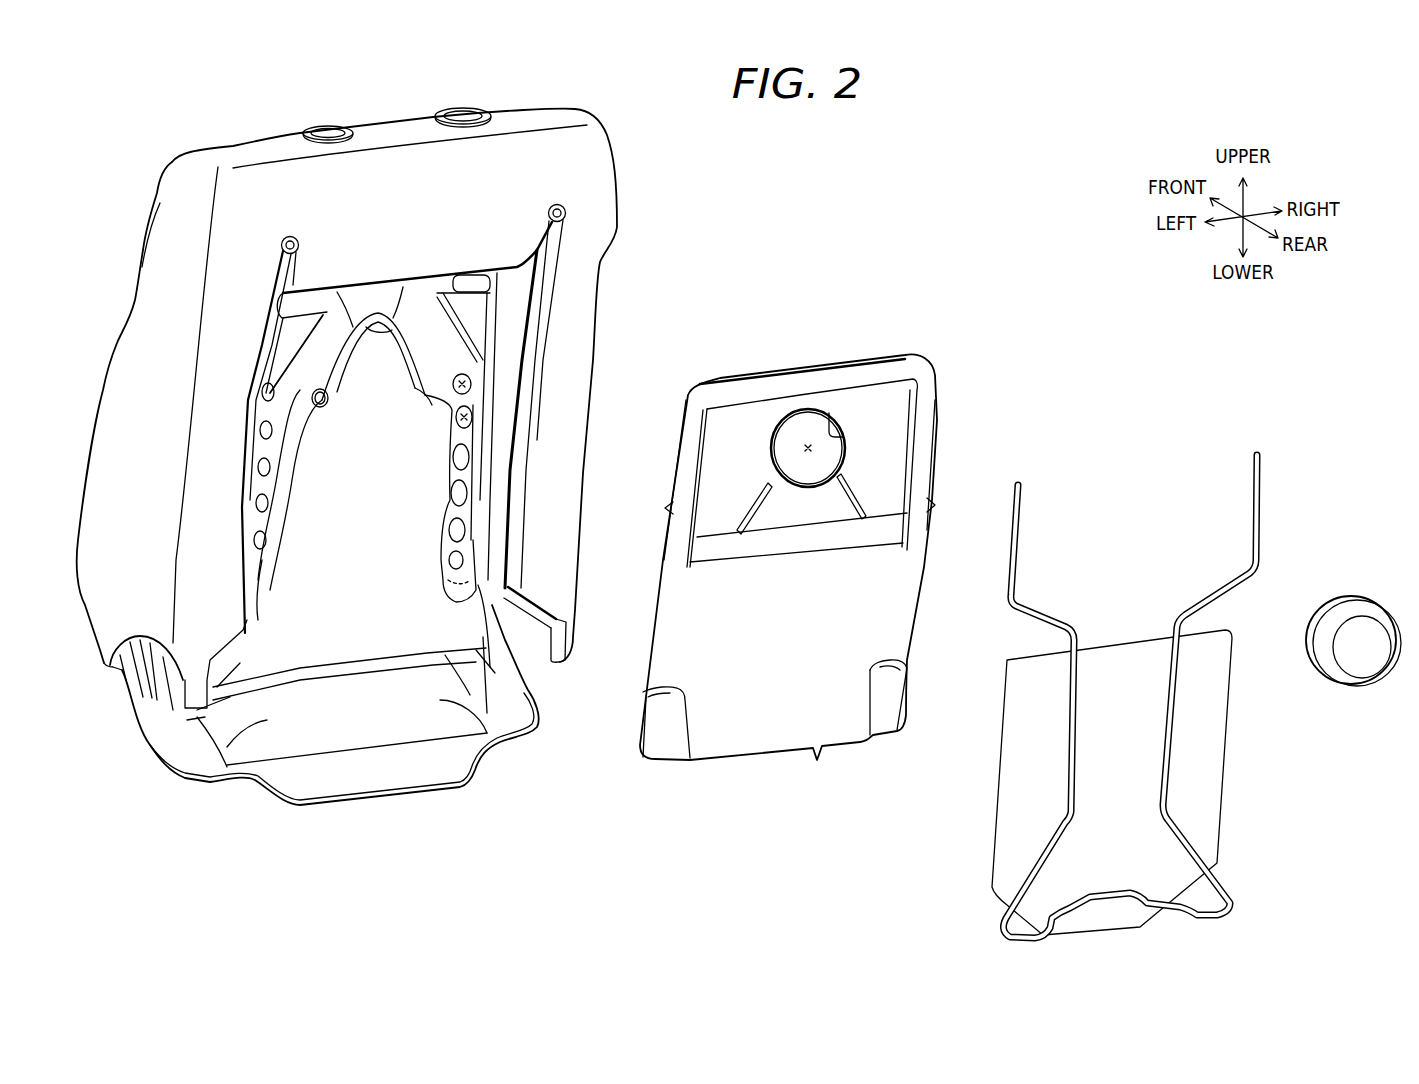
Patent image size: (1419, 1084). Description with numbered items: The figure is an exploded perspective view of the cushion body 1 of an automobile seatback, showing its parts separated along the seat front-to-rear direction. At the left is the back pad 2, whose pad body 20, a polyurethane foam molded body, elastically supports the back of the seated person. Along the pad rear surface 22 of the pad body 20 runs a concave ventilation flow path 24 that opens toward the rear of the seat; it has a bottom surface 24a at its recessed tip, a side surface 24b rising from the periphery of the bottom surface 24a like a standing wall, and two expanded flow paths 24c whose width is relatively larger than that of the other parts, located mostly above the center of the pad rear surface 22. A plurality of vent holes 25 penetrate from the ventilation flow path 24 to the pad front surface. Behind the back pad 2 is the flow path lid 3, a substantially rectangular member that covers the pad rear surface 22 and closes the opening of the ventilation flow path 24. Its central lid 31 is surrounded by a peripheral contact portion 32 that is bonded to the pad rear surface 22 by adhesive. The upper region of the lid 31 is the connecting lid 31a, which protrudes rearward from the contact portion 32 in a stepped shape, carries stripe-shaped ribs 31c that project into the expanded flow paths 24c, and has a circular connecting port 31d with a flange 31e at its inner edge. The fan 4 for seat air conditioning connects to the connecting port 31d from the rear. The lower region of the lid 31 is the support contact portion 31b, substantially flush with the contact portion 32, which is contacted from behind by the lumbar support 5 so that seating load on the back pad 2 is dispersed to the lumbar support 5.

The cushion body 1 is at (913, 181).
The back pad 2 is at (244, 142).
The flow path lid 3 is at (896, 350).
The fan 4 is at (1345, 597).
The lumbar support 5 is at (1120, 640).
The pad body 20 is at (399, 133).
The pad rear surface 22 is at (360, 605).
The ventilation flow path 24 is at (433, 348).
The bottom surface 24a is at (368, 300).
The side surface 24b is at (350, 372).
The expanded flow path 24c is at (300, 388).
The vent hole 25 is at (455, 420).
The lid 31 is at (895, 420).
The connecting lid 31a is at (735, 428).
The support contact portion 31b is at (785, 710).
The rib 31c is at (850, 510).
The connecting port 31d is at (805, 448).
The flange 31e is at (838, 425).
The contact portion 32 is at (688, 460).